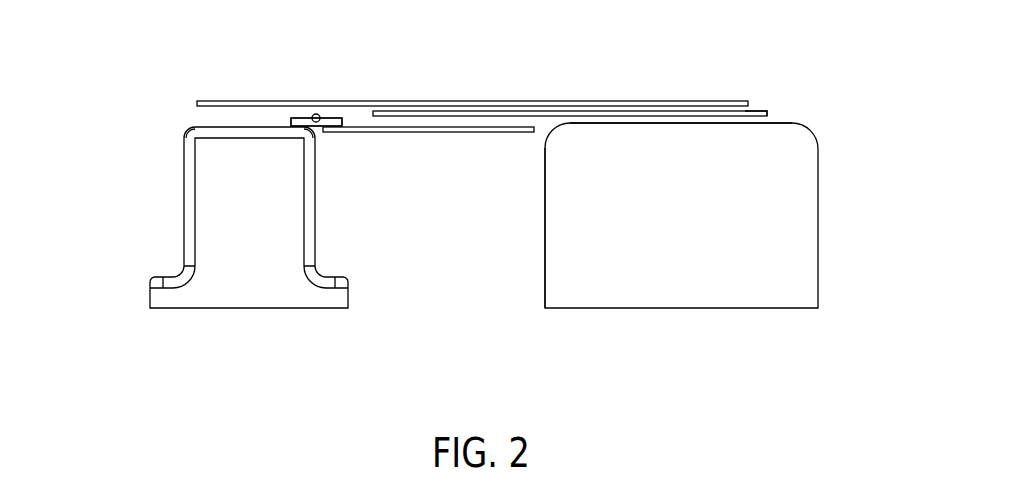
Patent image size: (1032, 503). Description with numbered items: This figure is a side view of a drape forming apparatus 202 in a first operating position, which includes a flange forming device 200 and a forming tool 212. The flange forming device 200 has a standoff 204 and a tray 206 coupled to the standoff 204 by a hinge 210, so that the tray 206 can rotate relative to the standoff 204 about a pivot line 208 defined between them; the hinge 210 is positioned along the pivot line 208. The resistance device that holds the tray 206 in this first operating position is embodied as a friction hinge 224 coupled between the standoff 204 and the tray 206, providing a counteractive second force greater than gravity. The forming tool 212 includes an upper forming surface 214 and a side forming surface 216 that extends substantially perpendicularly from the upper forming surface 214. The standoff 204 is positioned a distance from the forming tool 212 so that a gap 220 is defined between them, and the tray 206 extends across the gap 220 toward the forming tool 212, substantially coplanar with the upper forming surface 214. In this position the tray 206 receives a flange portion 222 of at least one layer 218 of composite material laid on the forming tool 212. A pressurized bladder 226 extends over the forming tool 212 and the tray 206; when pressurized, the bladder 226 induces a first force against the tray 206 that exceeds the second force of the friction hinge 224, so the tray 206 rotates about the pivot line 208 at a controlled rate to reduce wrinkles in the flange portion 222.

The flange forming device 200 is at (136, 110).
The drape forming apparatus 202 is at (786, 40).
The standoff 204 is at (184, 191).
The tray 206 is at (472, 133).
The pivot line 208 is at (334, 101).
The hinge 210 is at (314, 113).
The friction hinge 224 is at (316, 122).
The forming tool 212 is at (818, 155).
The upper forming surface 214 is at (791, 122).
The side forming surface 216 is at (545, 255).
The layer of composite material 218 is at (762, 111).
The gap 220 is at (398, 300).
The flange portion 222 is at (475, 108).
The pressurized bladder 226 is at (593, 102).